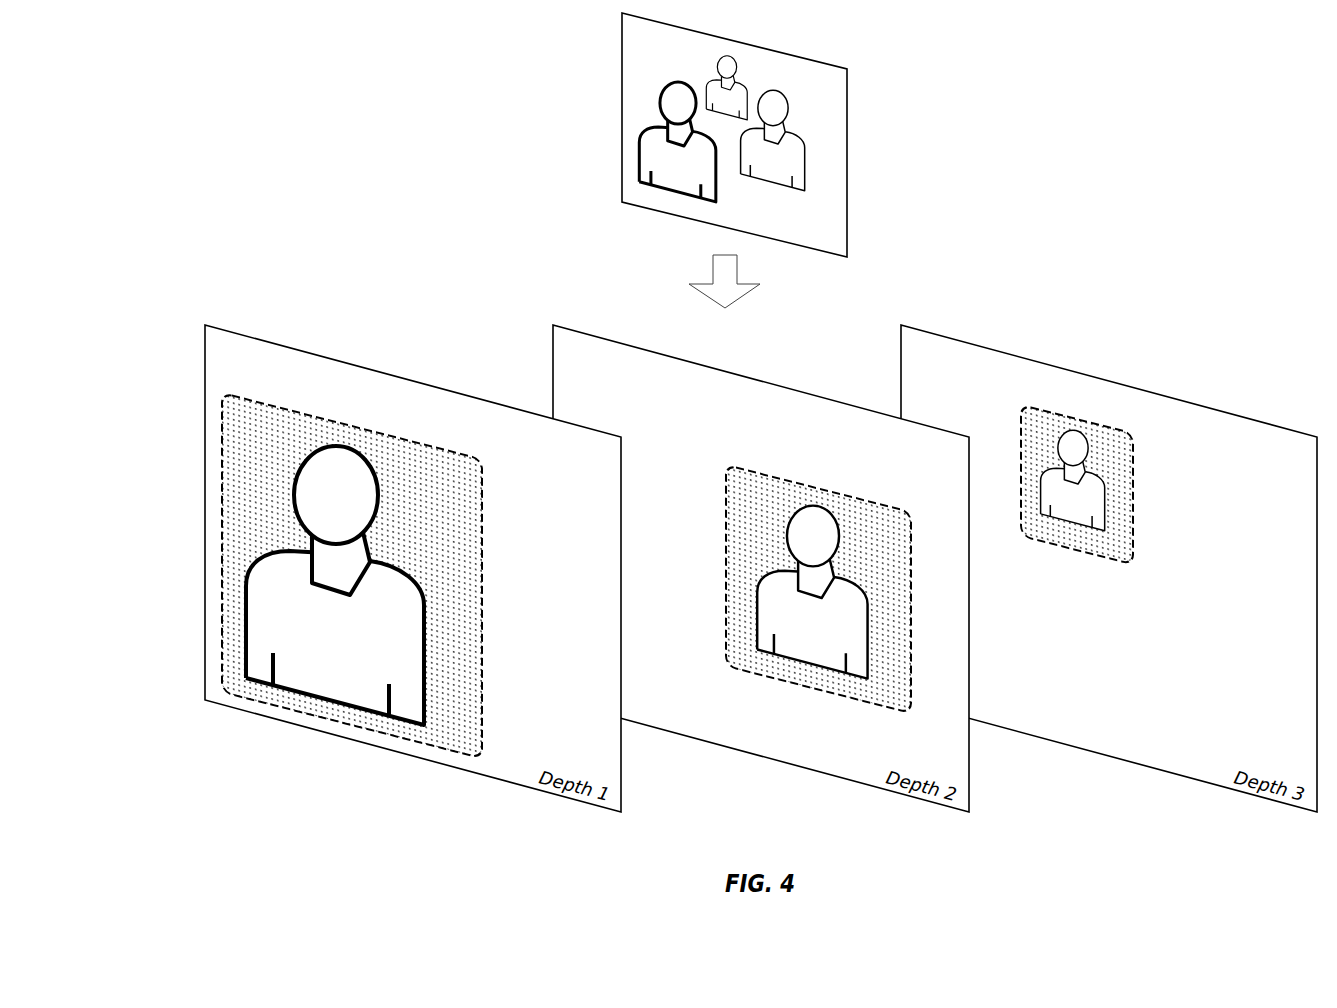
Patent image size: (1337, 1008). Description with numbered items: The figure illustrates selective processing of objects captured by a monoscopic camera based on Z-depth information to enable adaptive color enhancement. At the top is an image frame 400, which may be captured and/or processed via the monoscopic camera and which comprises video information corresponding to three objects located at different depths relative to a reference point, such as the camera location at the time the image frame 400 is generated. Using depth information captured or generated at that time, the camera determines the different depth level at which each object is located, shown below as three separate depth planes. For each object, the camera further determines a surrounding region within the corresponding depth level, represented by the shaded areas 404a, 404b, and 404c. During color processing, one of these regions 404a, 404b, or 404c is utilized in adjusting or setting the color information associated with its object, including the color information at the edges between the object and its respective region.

The image frame 400 is at (772, 135).
The shaded area 404a is at (395, 575).
The shaded area 404b is at (778, 583).
The shaded area 404c is at (1120, 485).